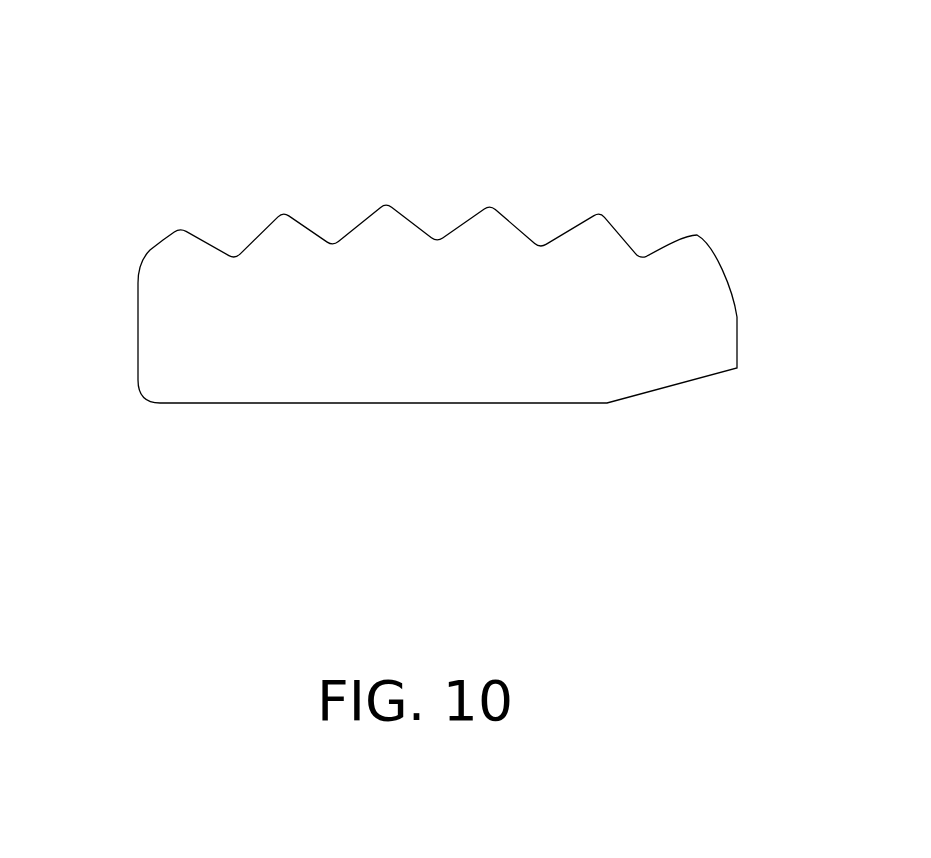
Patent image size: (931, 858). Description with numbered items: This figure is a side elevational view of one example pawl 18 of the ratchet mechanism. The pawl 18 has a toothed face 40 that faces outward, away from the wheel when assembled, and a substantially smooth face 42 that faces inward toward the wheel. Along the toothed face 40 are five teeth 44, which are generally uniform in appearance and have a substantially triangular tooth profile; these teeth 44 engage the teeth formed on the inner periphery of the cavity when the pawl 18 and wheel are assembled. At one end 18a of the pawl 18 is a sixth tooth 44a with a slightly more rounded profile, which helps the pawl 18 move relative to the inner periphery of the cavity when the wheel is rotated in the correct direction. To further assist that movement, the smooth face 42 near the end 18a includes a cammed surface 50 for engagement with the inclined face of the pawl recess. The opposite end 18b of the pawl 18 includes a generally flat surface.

The pawl 18 is at (513, 94).
The end of the pawl 18a is at (738, 315).
The opposite end of the pawl 18b is at (137, 345).
The toothed face 40 is at (605, 211).
The smooth face 42 is at (427, 403).
The teeth 44 is at (180, 236).
The sixth tooth 44a is at (700, 229).
The cammed surface 50 is at (675, 383).